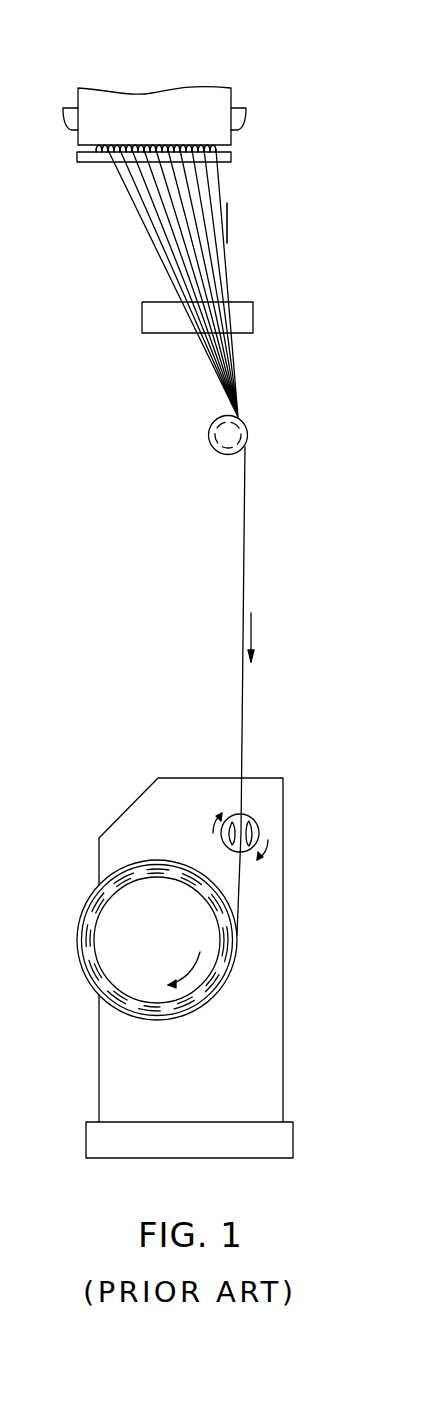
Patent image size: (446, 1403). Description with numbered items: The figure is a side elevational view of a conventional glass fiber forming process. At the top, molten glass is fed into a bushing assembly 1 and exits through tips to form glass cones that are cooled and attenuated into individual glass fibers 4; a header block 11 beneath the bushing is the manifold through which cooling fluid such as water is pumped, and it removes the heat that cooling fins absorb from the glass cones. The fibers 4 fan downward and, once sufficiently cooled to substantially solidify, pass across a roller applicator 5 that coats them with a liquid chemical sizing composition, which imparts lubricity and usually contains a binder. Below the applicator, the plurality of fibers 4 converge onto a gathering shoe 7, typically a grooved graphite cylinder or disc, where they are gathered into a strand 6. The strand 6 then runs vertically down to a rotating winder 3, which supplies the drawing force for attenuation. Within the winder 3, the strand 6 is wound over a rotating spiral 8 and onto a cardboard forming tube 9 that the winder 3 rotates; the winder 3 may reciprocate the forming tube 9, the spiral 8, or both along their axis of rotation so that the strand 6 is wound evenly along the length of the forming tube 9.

The bushing assembly 1 is at (178, 84).
The header block 11 is at (90, 163).
The glass fibers 4 is at (168, 242).
The roller applicator 5 is at (162, 333).
The gathering shoe 7 is at (226, 458).
The strand 6 is at (245, 545).
The winder 3 is at (165, 777).
The spiral 8 is at (261, 832).
The forming tube 9 is at (104, 913).